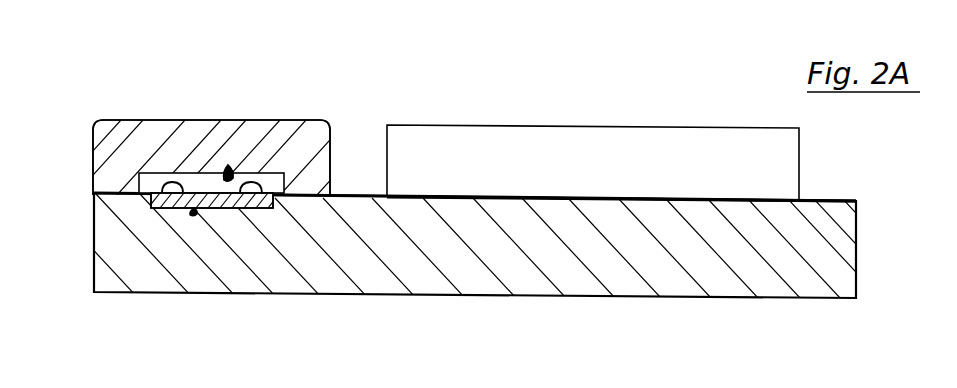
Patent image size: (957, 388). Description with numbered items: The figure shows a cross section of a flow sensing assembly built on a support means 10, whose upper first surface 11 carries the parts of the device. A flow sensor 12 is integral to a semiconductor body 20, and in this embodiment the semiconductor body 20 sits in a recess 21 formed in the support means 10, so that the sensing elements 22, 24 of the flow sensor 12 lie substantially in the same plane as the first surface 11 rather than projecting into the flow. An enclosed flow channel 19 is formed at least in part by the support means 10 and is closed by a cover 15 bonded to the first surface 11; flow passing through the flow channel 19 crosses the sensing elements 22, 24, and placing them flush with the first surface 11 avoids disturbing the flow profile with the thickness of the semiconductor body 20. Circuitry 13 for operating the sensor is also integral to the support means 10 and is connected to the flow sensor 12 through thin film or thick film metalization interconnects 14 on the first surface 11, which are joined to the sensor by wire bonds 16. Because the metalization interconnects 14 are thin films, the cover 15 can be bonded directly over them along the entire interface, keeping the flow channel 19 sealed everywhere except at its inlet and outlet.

The support means 10 is at (562, 273).
The first surface 11 is at (835, 200).
The flow sensor 12 is at (230, 202).
The circuitry 13 is at (577, 174).
The metalization interconnects 14 is at (139, 174).
The cover 15 is at (327, 123).
The wire bonds 16 is at (168, 181).
The flow channel 19 is at (208, 183).
The semiconductor body 20 is at (212, 200).
The recess 21 is at (192, 216).
The sensing element 22 is at (228, 177).
The sensing element 24 is at (229, 173).